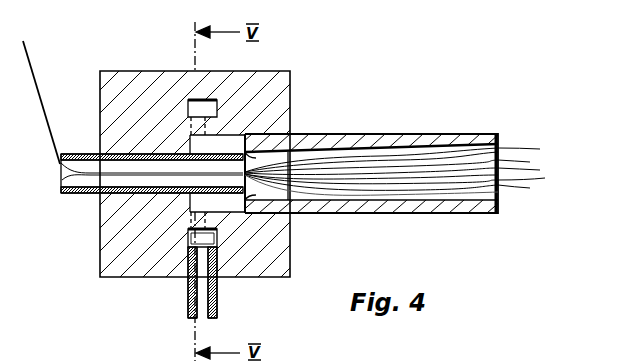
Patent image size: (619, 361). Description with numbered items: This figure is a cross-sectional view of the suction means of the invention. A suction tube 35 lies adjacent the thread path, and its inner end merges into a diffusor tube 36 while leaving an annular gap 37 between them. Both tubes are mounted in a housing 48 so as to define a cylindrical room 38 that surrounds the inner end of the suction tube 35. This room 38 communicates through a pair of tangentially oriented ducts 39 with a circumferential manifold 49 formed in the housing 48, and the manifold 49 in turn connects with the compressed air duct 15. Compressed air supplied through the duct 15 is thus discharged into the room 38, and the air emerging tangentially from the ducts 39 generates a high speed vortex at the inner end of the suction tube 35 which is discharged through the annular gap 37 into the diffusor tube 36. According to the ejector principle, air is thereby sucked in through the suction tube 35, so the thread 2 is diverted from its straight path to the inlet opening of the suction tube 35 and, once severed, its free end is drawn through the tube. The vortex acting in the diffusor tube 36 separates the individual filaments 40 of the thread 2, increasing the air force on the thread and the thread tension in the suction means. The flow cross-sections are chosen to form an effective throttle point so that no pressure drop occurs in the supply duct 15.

The thread 2 is at (35, 60).
The housing 48 is at (160, 72).
The cylindrical room 38 is at (250, 108).
The suction tube 35 is at (67, 197).
The annular gap 37 is at (289, 151).
The diffusor tube 36 is at (397, 140).
The filaments 40 is at (418, 165).
The tangentially oriented ducts 39 is at (197, 215).
The circumferential manifold 49 is at (212, 235).
The duct 15 is at (218, 301).